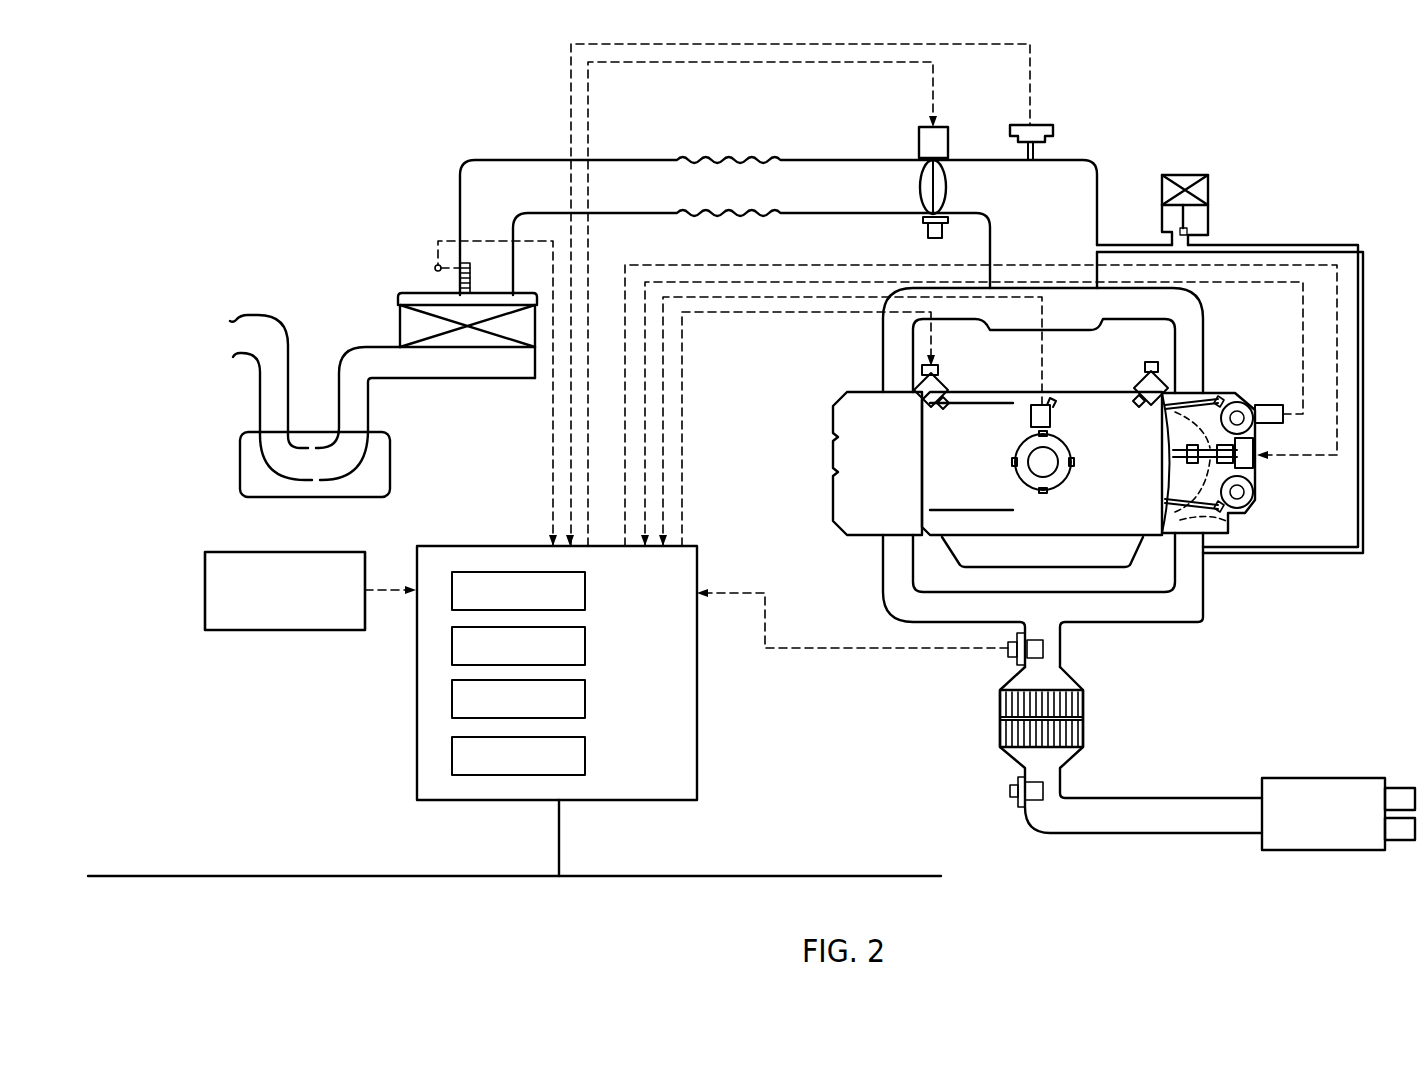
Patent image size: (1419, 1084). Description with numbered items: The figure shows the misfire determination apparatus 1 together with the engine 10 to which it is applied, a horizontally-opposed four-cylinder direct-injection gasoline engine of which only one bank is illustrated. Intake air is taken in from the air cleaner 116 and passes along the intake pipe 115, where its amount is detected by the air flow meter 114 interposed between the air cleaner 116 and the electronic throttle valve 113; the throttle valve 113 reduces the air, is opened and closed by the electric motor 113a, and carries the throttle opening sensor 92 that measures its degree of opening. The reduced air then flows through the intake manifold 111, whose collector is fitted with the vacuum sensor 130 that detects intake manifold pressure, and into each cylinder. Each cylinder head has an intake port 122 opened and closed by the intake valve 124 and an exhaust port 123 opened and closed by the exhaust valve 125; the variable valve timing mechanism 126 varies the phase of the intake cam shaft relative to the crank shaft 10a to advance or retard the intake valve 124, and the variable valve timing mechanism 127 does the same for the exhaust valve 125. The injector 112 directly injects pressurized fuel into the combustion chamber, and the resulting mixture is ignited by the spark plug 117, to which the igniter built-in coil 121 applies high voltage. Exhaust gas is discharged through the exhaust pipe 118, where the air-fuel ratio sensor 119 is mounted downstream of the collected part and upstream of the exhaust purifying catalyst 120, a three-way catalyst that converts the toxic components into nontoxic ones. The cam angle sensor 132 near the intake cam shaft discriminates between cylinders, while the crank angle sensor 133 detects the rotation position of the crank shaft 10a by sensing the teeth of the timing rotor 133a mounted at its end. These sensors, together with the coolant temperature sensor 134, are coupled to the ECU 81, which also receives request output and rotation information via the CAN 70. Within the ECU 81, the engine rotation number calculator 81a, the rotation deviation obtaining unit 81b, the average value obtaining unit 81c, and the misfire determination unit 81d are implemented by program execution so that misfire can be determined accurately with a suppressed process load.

The misfire determination apparatus 1 is at (745, 470).
The engine 10 is at (1052, 527).
The crank shaft 10a is at (1013, 470).
The CAN 70 is at (865, 874).
The ECU 81 is at (600, 705).
The engine rotation number calculator 81a is at (587, 592).
The rotation deviation obtaining unit 81b is at (587, 648).
The average value obtaining unit 81c is at (587, 702).
The misfire determination unit 81d is at (587, 757).
The throttle opening sensor 92 is at (921, 228).
The intake manifold 111 is at (883, 355).
The injector 112 is at (946, 380).
The electronic throttle valve 113 is at (920, 175).
The electric motor 113a is at (919, 136).
The air flow meter 114 is at (458, 287).
The intake pipe 115 is at (784, 160).
The air cleaner 116 is at (400, 321).
The spark plug 117 is at (1165, 470).
The exhaust pipe 118 is at (892, 578).
The air-fuel ratio sensor 119 is at (1008, 656).
The exhaust purifying catalyst 120 is at (1083, 727).
The igniter built-in coil 121 is at (1255, 460).
The intake port 122 is at (1172, 405).
The exhaust port 123 is at (1230, 516).
The intake valve 124 is at (1173, 448).
The exhaust valve 125 is at (1163, 505).
The variable valve timing mechanism 126 is at (1237, 392).
The variable valve timing mechanism 127 is at (1253, 494).
The vacuum sensor 130 is at (1053, 130).
The cam angle sensor 132 is at (1268, 405).
The crank angle sensor 133 is at (1031, 418).
The timing rotor 133a is at (1015, 462).
The coolant temperature sensor 134 is at (205, 589).